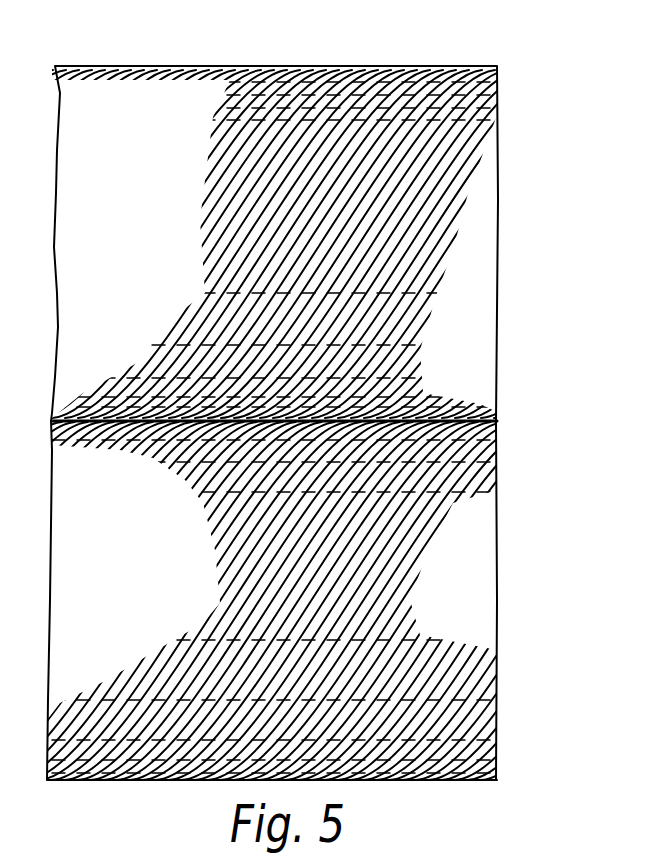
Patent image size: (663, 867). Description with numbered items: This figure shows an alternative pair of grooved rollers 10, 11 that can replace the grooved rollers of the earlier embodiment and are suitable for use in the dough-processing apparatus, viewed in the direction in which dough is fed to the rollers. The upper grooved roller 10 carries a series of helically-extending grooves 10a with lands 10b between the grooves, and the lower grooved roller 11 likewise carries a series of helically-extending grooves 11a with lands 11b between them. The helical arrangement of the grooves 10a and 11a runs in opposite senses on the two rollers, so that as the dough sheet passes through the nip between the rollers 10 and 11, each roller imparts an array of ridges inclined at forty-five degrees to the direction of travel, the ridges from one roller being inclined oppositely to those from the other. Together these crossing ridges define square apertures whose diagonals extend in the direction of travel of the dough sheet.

The grooved roller 10 is at (480, 272).
The helically-extending grooves 10a is at (450, 128).
The lands 10b is at (398, 100).
The grooved roller 11 is at (480, 593).
The helically-extending grooves 11a is at (380, 500).
The lands 11b is at (410, 715).